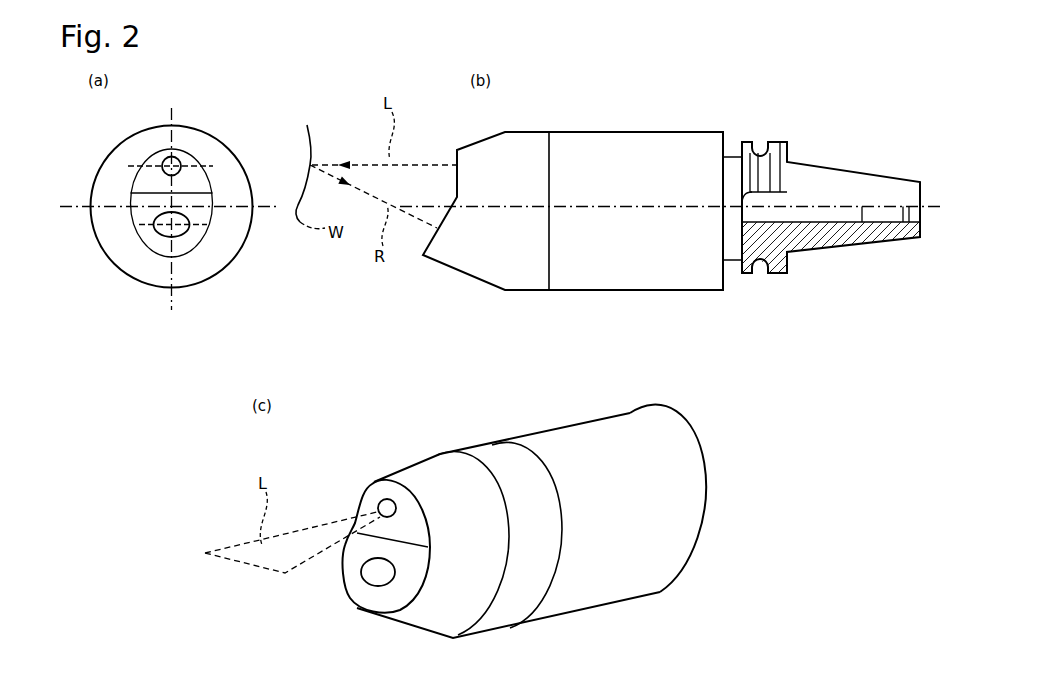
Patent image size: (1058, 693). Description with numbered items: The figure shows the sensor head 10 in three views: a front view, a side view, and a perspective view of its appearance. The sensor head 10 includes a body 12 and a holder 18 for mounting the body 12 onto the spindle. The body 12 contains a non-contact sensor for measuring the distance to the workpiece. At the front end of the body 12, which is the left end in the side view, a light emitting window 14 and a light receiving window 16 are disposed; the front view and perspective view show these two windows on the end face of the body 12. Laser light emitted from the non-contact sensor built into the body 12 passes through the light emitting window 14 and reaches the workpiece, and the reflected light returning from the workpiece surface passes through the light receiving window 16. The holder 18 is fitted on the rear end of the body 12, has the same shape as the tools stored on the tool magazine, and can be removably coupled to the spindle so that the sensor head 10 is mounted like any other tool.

The sensor head 10 is at (539, 408).
The body 12 is at (622, 131).
The light emitting window 14 is at (178, 159).
The light receiving window 16 is at (192, 228).
The holder 18 is at (823, 162).